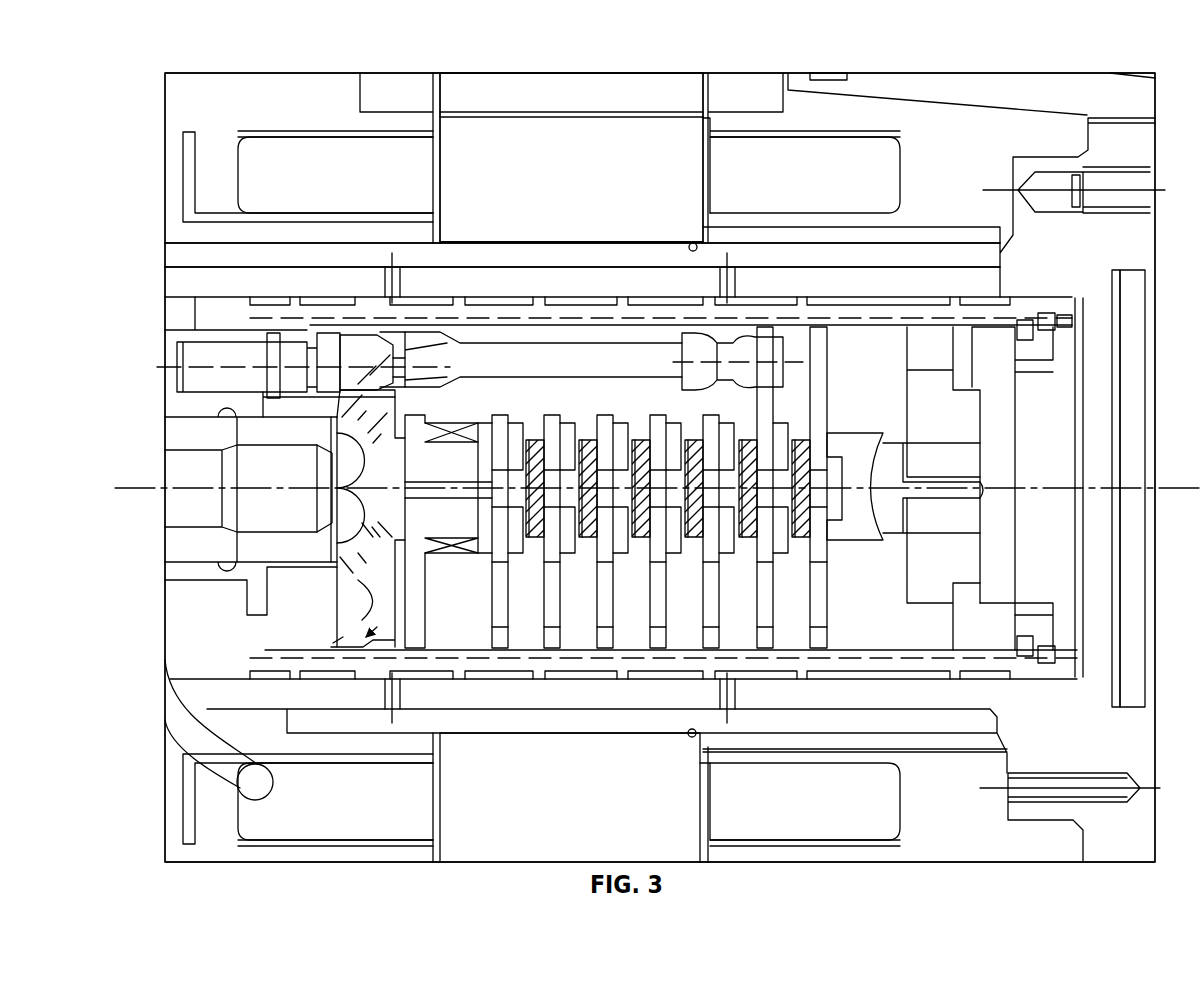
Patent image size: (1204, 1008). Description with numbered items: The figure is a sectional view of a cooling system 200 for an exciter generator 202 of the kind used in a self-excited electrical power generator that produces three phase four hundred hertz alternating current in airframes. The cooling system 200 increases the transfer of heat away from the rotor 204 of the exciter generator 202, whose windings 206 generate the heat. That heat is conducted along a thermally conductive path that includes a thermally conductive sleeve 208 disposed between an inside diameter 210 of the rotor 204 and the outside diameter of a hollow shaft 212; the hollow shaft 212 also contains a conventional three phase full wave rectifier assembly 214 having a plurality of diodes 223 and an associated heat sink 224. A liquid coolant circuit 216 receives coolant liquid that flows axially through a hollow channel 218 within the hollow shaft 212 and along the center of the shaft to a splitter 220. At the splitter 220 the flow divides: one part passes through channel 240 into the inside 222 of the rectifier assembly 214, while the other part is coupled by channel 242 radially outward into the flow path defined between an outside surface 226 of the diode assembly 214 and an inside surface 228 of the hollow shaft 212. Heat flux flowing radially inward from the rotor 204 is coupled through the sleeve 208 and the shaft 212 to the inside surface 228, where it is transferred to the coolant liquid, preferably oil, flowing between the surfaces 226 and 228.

The cooling system 200 is at (523, 60).
The exciter generator 202 is at (285, 102).
The rotor 204 is at (547, 193).
The windings 206 is at (335, 175).
The thermally conductive sleeve 208 is at (805, 200).
The inside diameter 210 is at (604, 242).
The hollow shaft 212 is at (163, 258).
The three phase full wave rectifier assembly 214 is at (460, 625).
The liquid coolant circuit 216 is at (156, 425).
The hollow channel 218 is at (163, 463).
The splitter 220 is at (325, 490).
The inside of the fullwave rectifier assembly 222 is at (163, 337).
The diodes 223 is at (810, 520).
The heat sink 224 is at (703, 617).
The outside surface 226 is at (357, 680).
The inside surface 228 is at (497, 682).
The channel 240 is at (360, 458).
The channel 242 is at (250, 657).